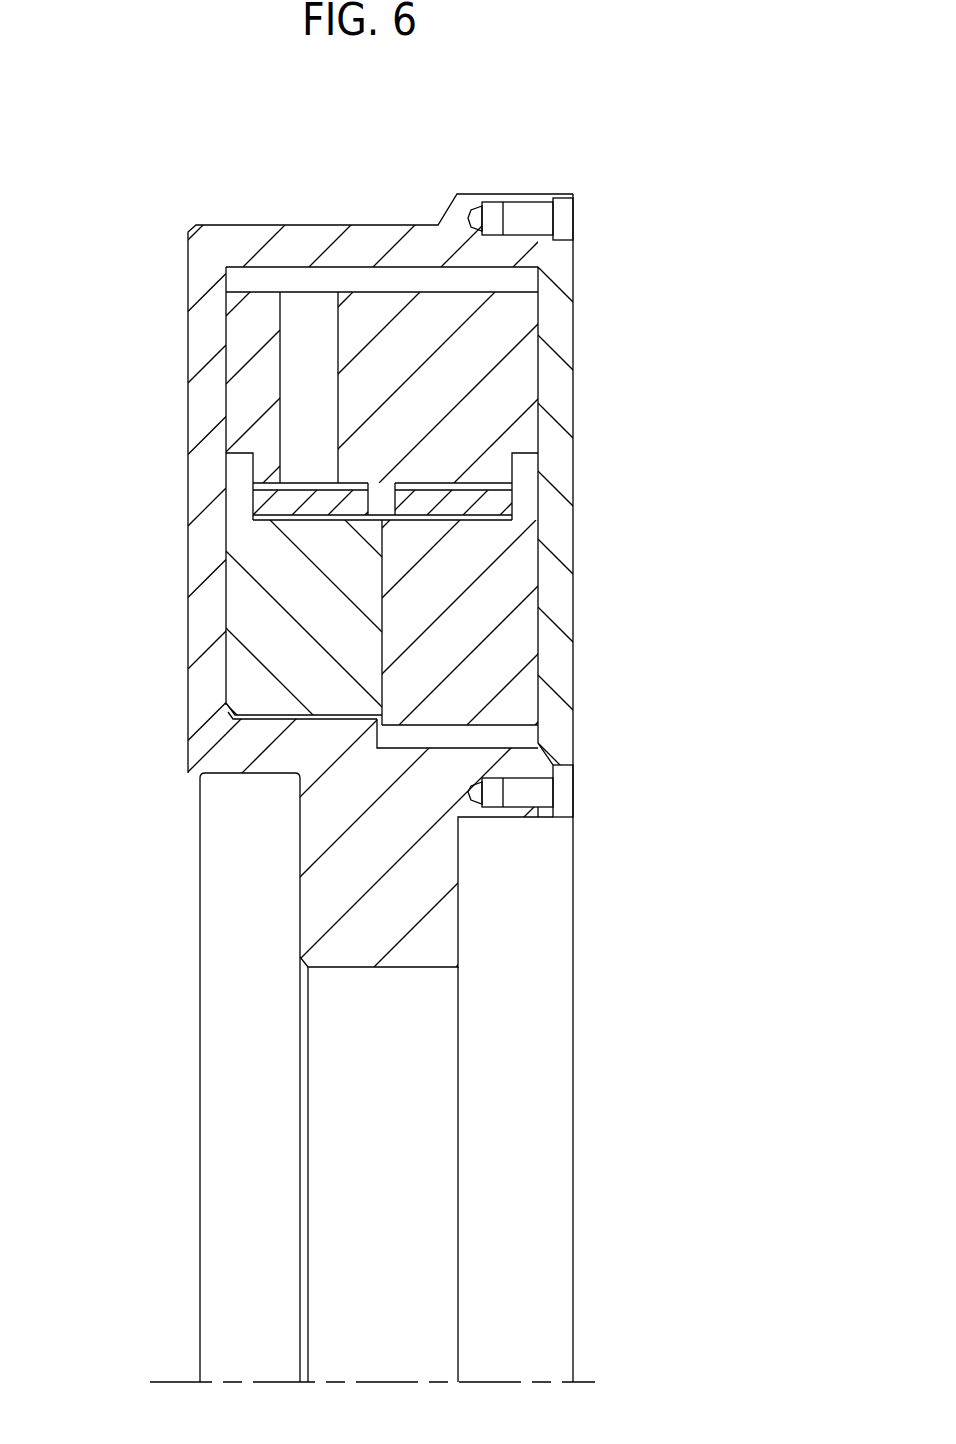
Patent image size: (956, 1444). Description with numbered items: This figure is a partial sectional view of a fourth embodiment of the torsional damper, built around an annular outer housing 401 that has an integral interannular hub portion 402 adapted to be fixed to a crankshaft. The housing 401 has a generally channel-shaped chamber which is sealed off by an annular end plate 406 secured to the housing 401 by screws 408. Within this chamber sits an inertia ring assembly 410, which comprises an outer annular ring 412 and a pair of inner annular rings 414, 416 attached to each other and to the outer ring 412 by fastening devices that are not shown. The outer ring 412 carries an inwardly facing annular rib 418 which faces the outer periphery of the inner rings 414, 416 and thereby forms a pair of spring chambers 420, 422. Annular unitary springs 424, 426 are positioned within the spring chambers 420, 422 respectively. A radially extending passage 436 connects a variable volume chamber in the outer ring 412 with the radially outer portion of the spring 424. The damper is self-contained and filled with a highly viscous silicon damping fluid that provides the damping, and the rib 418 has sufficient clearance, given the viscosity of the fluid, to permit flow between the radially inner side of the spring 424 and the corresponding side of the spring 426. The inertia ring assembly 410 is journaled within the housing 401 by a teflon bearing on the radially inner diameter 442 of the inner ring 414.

The annular outer housing 401 is at (188, 612).
The interannular hub portion 402 is at (327, 905).
The annular end plate 406 is at (562, 685).
The screws 408 is at (565, 222).
The inertia ring assembly 410 is at (512, 376).
The outer annular ring 412 is at (503, 325).
The inner annular ring 414 is at (248, 687).
The inner annular ring 416 is at (518, 623).
The annular rib 418 is at (383, 500).
The spring chamber 420 is at (250, 490).
The spring chamber 422 is at (495, 477).
The annular unitary spring 424 is at (292, 500).
The annular unitary spring 426 is at (475, 520).
The radially extending passage 436 is at (295, 378).
The radially inner diameter 442 is at (297, 717).